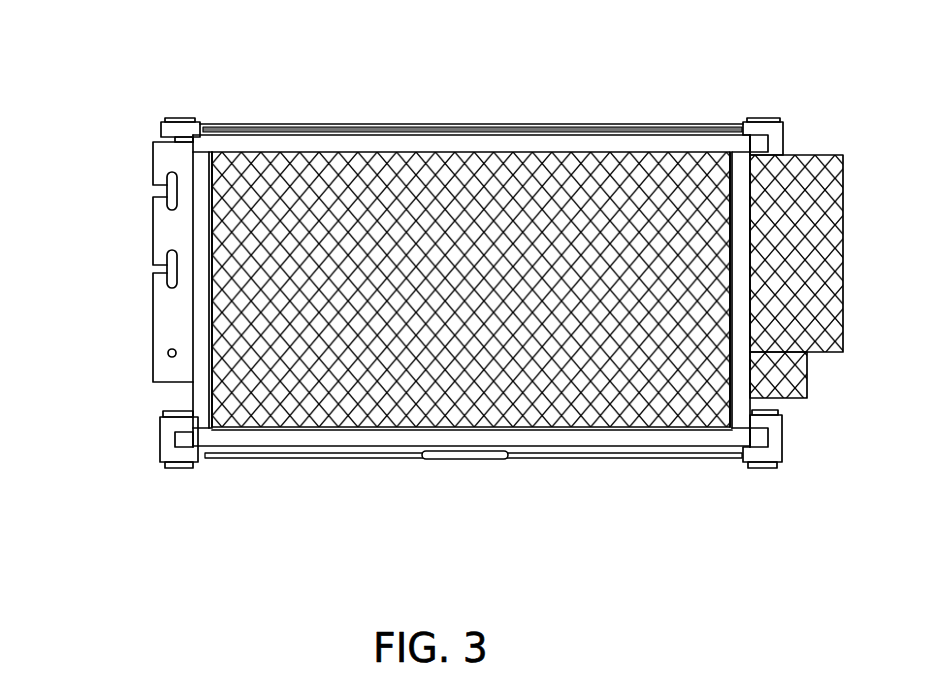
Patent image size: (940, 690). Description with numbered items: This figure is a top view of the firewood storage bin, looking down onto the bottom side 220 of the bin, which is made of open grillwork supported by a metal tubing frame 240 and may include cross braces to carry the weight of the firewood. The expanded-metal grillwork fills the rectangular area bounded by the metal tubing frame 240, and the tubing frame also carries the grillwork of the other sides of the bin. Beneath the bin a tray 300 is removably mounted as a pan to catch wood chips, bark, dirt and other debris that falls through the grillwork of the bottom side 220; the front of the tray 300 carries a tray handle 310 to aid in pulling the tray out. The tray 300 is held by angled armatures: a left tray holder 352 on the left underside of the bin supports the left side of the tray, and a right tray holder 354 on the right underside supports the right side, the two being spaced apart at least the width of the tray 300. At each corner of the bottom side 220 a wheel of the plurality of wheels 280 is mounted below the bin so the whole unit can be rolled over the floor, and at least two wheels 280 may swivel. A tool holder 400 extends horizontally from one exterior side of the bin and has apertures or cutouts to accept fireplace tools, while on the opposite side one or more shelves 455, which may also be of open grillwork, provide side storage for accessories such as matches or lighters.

The bottom side 220 is at (552, 368).
The metal tubing frame 240 is at (460, 150).
The plurality of wheels 280 is at (180, 118).
The tray 300 is at (250, 458).
The tray handle 310 is at (453, 458).
The left tray holder 352 is at (213, 200).
The right tray holder 354 is at (730, 212).
The tool holder 400 is at (160, 223).
The shelves 455 is at (843, 342).